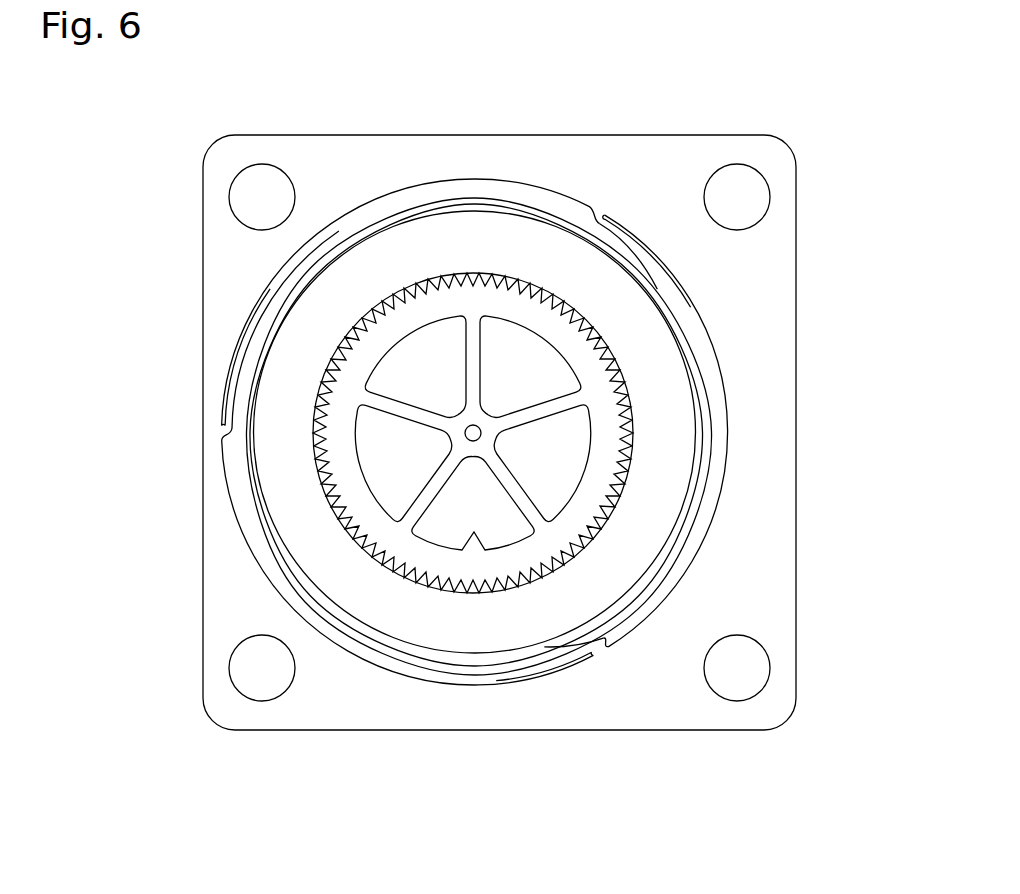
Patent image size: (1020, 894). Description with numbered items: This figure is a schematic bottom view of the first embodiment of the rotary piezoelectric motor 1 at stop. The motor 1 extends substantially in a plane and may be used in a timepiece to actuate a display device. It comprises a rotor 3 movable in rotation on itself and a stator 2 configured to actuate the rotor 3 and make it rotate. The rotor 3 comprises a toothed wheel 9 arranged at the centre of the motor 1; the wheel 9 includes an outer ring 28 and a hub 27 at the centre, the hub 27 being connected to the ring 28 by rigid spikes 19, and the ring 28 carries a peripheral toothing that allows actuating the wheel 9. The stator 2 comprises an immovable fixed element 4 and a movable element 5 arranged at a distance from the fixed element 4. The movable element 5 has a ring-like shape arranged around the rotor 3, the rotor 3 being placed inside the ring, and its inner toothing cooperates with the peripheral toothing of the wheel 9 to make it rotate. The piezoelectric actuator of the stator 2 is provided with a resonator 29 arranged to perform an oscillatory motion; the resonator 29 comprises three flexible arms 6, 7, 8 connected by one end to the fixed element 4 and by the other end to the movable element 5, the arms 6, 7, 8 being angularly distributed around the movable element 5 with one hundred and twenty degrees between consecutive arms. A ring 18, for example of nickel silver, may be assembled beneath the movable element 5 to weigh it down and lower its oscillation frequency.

The rotary piezoelectric motor 1 is at (539, 389).
The stator 2 is at (658, 153).
The rotor 3 is at (631, 460).
The fixed element 4 is at (354, 166).
The movable element 5 is at (687, 427).
The flexible arm 6 is at (419, 663).
The flexible arm 7 is at (692, 332).
The flexible arm 8 is at (240, 322).
The toothed wheel 9 is at (322, 490).
The ring 18 is at (514, 240).
The rigid spikes 19 is at (477, 338).
The hub 27 is at (493, 436).
The outer ring 28 is at (548, 535).
The resonator 29 is at (262, 566).